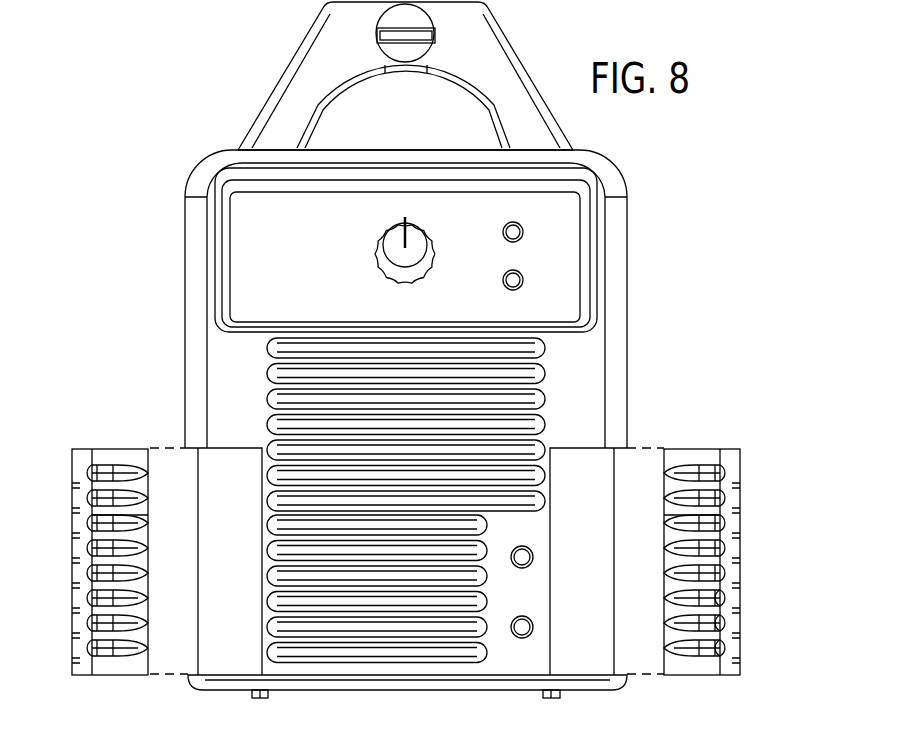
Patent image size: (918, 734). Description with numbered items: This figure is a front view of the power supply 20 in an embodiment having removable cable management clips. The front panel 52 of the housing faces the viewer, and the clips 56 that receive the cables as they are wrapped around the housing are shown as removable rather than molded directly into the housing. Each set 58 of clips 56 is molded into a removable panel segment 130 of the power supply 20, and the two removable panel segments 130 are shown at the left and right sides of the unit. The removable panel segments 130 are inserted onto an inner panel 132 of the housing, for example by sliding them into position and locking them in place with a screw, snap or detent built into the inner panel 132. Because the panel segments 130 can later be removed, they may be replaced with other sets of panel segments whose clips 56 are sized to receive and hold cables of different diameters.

The power supply 20 is at (195, 94).
The front panel 52 is at (595, 372).
The clips 56 is at (735, 652).
The set of clips 58 is at (80, 427).
The removable panel segment 130 is at (110, 675).
The inner panel 132 is at (198, 548).